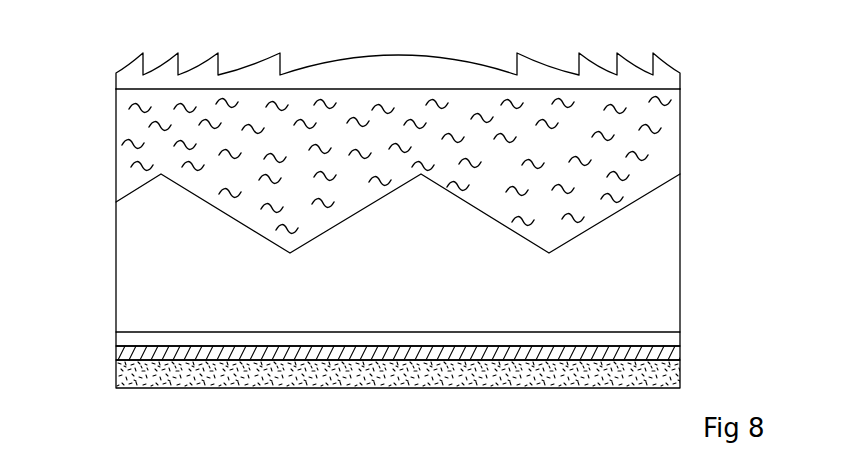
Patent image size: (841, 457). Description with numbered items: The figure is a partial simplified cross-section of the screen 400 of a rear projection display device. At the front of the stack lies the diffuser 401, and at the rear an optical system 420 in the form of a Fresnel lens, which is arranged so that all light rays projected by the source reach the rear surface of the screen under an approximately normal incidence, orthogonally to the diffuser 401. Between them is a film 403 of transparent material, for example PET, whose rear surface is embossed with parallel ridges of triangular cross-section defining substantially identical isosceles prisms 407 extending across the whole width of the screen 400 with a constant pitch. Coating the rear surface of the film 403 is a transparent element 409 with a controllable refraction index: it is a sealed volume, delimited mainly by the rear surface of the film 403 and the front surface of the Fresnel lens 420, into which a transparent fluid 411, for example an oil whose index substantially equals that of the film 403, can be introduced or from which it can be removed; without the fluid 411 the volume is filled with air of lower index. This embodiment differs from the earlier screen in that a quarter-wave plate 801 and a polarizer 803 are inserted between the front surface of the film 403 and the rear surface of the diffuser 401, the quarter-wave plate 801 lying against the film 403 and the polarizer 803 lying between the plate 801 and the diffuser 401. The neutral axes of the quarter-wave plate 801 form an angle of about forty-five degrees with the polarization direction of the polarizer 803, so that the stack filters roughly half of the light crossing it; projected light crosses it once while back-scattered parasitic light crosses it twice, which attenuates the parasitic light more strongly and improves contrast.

The screen 400 is at (700, 89).
The diffuser 401 is at (153, 372).
The film 403 is at (153, 291).
The prisms 407 is at (153, 223).
The transparent element 409 is at (156, 135).
The transparent fluid 411 is at (143, 154).
The optical system 420 is at (668, 68).
The quarter-wave plate 801 is at (128, 338).
The polarizer 803 is at (130, 353).